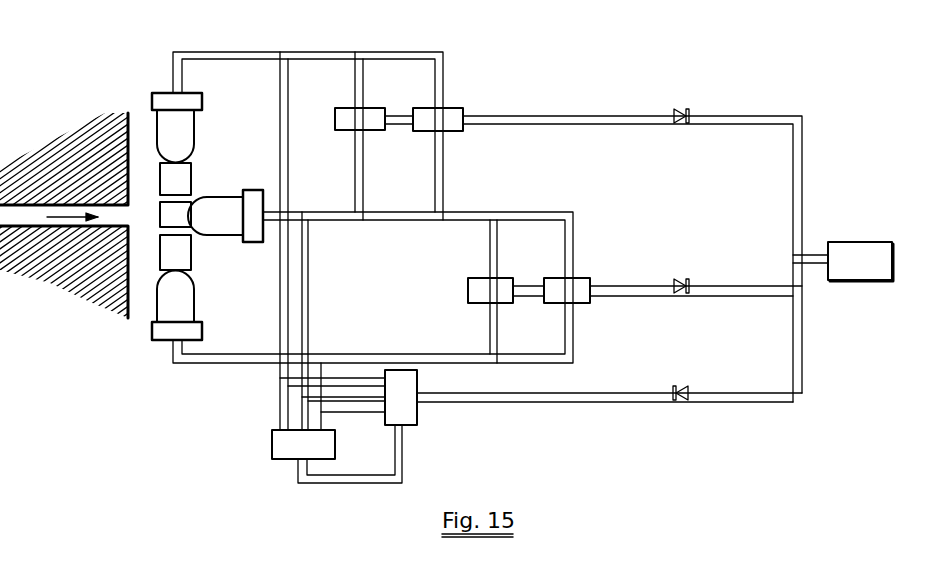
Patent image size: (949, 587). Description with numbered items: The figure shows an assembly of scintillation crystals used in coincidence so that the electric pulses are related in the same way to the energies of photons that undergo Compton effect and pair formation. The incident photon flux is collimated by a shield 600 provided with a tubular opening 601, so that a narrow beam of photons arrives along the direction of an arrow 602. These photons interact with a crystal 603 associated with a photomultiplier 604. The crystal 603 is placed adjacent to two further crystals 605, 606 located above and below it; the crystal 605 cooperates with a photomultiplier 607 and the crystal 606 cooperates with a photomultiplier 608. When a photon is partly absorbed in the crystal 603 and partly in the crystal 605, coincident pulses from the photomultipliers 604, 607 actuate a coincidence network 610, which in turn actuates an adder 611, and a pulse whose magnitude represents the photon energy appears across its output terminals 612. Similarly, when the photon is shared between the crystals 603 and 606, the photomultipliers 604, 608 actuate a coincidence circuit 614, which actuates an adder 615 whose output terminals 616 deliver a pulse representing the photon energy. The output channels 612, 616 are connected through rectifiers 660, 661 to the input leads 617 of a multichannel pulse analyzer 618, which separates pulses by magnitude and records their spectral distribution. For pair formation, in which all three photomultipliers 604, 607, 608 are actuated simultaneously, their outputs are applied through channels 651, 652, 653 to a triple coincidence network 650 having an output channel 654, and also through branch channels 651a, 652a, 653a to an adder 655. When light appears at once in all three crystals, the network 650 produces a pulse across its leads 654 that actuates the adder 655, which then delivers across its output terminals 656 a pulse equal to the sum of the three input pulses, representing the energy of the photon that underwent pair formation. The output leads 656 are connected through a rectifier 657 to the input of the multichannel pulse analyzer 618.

The shield 600 is at (302, 170).
The tubular opening 601 is at (107, 220).
The arrow 602 is at (72, 213).
The crystal 603 is at (184, 222).
The photomultiplier 604 is at (252, 197).
The crystal 605 is at (183, 193).
The crystal 606 is at (182, 252).
The photomultiplier 607 is at (193, 105).
The photomultiplier 608 is at (193, 328).
The coincidence network 610 is at (371, 95).
The adder 611 is at (447, 125).
The output terminals 612 is at (563, 118).
The coincidence circuit 614 is at (497, 288).
The adder 615 is at (577, 285).
The output terminals 616 is at (703, 292).
The input leads 617 is at (813, 258).
The multichannel pulse analyzer 618 is at (822, 309).
The triple coincidence network 650 is at (283, 442).
The channel 651 is at (289, 93).
The channel 651a is at (355, 378).
The channel 652 is at (305, 270).
The channel 652a is at (365, 397).
The channel 653 is at (323, 370).
The channel 653a is at (340, 413).
The output channel 654 is at (335, 482).
The adder 655 is at (405, 388).
The output terminals 656 is at (580, 398).
The rectifier 657 is at (690, 392).
The rectifier 660 is at (677, 108).
The rectifier 661 is at (677, 280).